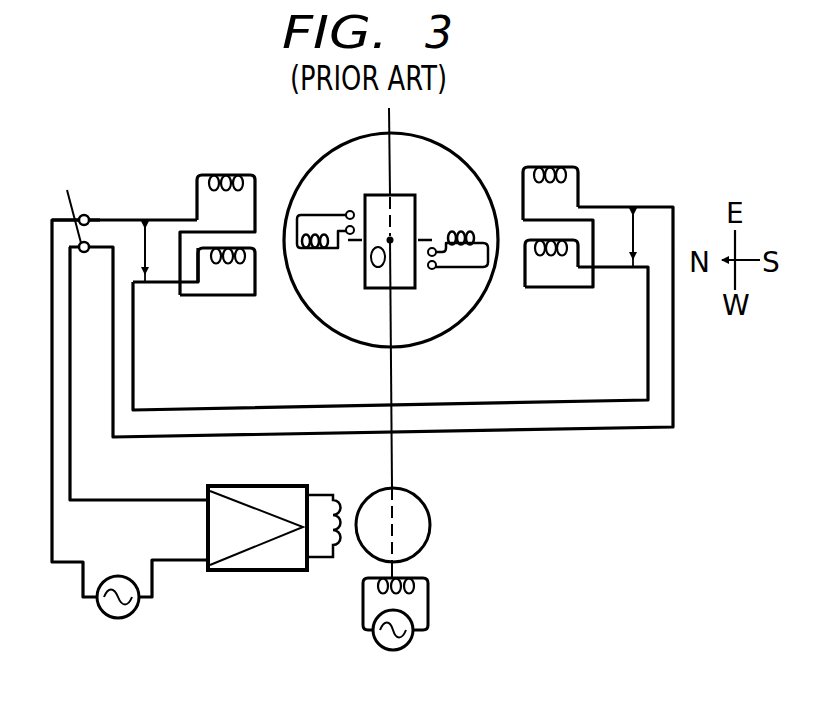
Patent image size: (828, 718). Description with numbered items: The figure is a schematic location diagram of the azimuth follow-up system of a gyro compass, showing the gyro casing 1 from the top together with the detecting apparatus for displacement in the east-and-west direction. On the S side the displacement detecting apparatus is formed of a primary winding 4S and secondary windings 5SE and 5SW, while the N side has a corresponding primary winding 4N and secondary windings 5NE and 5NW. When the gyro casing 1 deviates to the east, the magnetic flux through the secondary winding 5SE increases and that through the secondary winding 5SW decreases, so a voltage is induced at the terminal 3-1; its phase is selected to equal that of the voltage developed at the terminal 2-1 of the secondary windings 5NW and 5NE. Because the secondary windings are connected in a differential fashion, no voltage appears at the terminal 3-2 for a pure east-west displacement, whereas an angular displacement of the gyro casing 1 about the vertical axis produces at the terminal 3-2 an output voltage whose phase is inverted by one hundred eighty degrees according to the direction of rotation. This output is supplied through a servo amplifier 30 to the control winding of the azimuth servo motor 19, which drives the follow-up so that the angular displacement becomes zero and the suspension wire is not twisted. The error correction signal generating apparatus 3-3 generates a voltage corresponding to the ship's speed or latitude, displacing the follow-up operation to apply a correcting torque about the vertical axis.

The gyro casing 1 is at (454, 150).
The terminal 2-1 is at (150, 250).
The terminal 3-1 is at (634, 240).
The terminal 3-2 is at (80, 215).
The error correction signal generating apparatus 3-3 is at (113, 575).
The primary winding 4N is at (313, 253).
The primary winding 4S is at (466, 232).
The secondary winding 5NE is at (232, 175).
The secondary winding 5NW is at (228, 264).
The secondary winding 5SE is at (556, 167).
The secondary winding 5SW is at (551, 257).
The azimuth servo motor 19 is at (430, 527).
The servo amplifier 30 is at (248, 575).